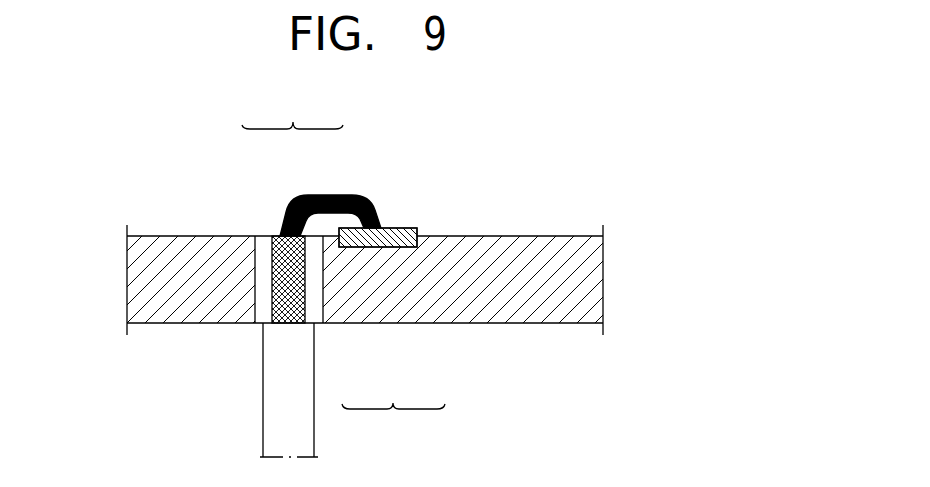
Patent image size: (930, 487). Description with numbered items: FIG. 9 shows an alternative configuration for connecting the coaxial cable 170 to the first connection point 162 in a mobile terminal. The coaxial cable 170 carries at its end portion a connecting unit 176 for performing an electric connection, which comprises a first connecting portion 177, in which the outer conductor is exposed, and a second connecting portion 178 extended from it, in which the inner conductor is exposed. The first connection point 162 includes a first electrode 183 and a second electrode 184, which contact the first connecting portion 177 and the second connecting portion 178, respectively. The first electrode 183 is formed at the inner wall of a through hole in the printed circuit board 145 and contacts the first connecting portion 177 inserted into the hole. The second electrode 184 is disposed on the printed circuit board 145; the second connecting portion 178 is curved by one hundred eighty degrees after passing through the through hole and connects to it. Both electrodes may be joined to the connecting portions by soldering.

The printed circuit board 145 is at (175, 247).
The first connection point 162 is at (393, 421).
The coaxial cable 170 is at (238, 400).
The connecting unit 176 is at (292, 112).
The first connecting portion 177 is at (272, 238).
The second connecting portion 178 is at (330, 194).
The first electrode 183 is at (318, 292).
The second electrode 184 is at (392, 247).